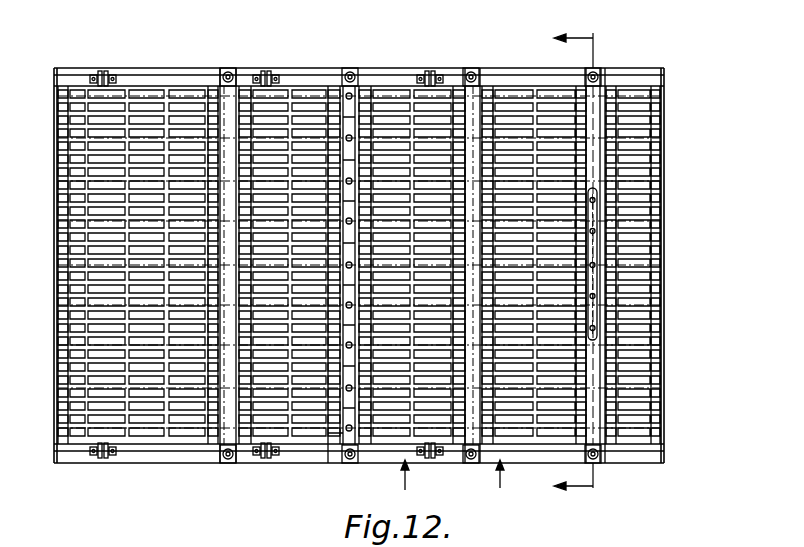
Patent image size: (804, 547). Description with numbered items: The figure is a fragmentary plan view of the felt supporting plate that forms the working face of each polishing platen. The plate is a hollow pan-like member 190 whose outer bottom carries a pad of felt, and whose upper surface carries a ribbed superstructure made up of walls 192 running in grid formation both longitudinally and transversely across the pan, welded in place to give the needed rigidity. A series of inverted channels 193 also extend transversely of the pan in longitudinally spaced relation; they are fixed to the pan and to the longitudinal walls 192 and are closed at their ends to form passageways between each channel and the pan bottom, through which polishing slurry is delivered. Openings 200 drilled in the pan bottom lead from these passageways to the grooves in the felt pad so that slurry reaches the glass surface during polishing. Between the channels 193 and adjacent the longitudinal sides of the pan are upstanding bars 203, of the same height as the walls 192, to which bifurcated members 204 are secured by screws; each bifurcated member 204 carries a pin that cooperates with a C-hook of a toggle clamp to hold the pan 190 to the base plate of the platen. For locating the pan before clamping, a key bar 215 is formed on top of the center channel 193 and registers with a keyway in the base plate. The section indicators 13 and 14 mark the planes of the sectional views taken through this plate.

The hollow pan-like member 190 is at (282, 65).
The walls 192 is at (630, 318).
The inverted channels 193 is at (458, 92).
The openings 200 is at (330, 436).
The upstanding bars 203 is at (375, 73).
The bifurcated members 204 is at (426, 72).
The key bar 215 is at (589, 236).
The section line 13 is at (607, 38).
The section line 14 is at (418, 488).